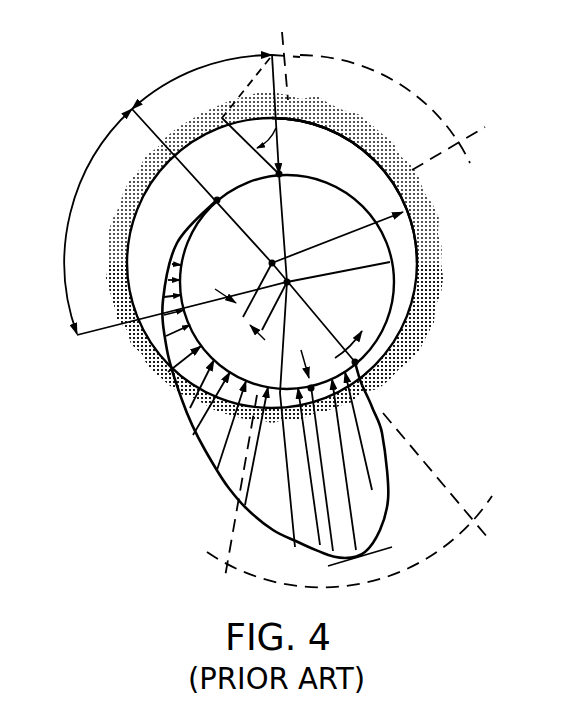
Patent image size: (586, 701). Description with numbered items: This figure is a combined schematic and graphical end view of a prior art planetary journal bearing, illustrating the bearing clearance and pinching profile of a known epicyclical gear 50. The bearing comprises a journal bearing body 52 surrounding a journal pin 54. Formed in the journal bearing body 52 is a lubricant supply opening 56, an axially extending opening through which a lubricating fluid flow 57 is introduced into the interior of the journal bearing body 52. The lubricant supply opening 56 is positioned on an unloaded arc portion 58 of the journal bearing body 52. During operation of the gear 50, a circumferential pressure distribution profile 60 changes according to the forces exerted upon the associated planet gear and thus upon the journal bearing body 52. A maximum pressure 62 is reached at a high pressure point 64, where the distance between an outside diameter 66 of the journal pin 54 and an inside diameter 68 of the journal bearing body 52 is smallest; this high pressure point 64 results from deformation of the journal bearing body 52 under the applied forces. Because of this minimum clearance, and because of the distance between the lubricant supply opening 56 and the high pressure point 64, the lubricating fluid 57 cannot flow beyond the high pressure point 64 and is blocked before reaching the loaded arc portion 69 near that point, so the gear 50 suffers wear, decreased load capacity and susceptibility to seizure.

The epicyclical gear 50 is at (474, 61).
The journal bearing body 52 is at (380, 153).
The journal pin 54 is at (351, 301).
The lubricant supply opening 56 is at (350, 129).
The lubricating fluid flow 57 is at (336, 139).
The unloaded arc portion 58 is at (405, 75).
The circumferential pressure distribution profile 60 is at (385, 475).
The maximum pressure 62 is at (372, 503).
The high pressure point 64 is at (380, 406).
The outside diameter of the journal pin 66 is at (390, 250).
The inside diameter of the journal bearing body 68 is at (411, 278).
The loaded arc portion 69 is at (443, 545).